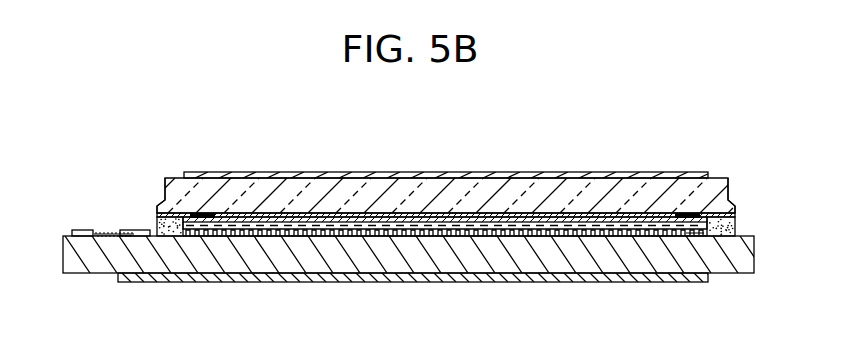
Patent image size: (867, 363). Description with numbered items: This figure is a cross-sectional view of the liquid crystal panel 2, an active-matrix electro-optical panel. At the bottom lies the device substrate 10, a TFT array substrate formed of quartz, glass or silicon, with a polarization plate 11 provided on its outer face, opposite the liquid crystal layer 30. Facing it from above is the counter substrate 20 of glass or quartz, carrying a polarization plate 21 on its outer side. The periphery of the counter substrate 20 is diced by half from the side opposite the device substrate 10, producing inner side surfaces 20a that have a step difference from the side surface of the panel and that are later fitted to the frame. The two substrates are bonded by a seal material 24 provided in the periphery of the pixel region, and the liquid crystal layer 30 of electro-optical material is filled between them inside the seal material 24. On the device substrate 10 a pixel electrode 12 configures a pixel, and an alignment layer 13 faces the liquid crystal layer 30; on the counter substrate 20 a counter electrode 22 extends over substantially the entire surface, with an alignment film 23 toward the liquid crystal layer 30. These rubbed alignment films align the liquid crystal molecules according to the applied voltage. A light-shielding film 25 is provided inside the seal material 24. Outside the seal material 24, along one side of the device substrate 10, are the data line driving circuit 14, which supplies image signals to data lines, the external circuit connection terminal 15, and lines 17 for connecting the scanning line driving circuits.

The liquid crystal panel 2 is at (723, 171).
The device substrate 10 is at (247, 260).
The polarization plate 11 is at (435, 278).
The pixel electrode 12 is at (490, 234).
The alignment layer 13 is at (595, 234).
The data line driving circuit 14 is at (135, 231).
The external circuit connection terminal 15 is at (77, 230).
The lines 17 is at (98, 232).
The counter substrate 20 is at (318, 192).
The inner side surface 20a is at (163, 187).
The polarization plate 21 is at (365, 175).
The counter electrode 22 is at (427, 215).
The alignment film 23 is at (557, 220).
The seal material 24 is at (168, 220).
The light-shielding film 25 is at (200, 215).
The liquid crystal layer 30 is at (367, 226).